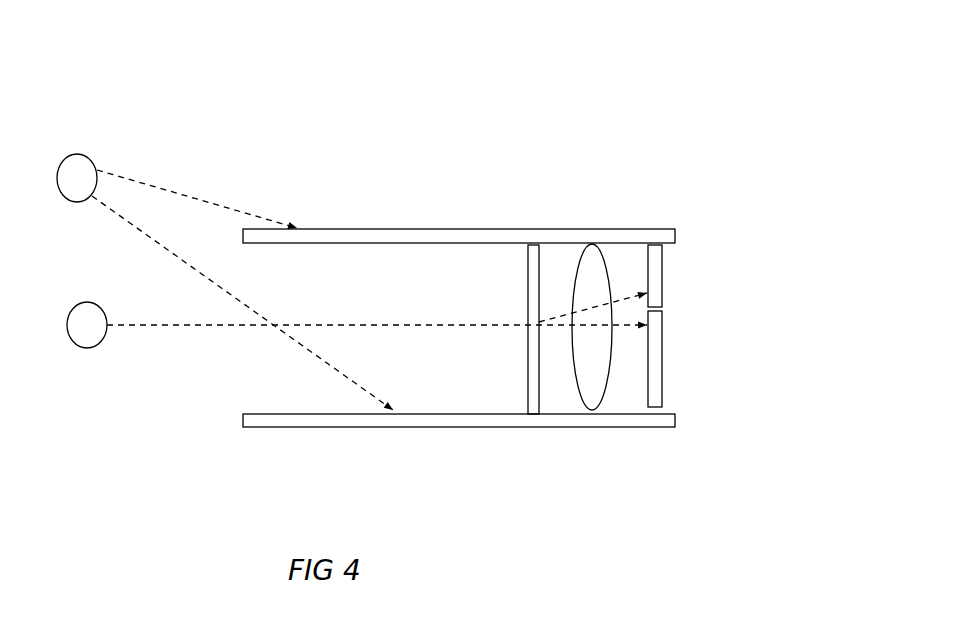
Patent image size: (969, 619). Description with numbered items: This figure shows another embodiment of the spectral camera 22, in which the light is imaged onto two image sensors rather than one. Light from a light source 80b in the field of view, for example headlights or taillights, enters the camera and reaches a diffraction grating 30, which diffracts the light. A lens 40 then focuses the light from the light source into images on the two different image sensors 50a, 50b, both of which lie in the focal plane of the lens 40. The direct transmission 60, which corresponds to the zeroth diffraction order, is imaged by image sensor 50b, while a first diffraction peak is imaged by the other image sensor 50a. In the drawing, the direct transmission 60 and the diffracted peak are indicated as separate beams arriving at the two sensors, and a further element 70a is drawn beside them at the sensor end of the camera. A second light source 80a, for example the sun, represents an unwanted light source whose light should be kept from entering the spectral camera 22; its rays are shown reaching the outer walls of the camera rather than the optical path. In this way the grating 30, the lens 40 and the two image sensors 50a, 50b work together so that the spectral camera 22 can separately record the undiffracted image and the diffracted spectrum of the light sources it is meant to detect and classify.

The spectral camera 22 is at (485, 132).
The diffraction grating 30 is at (533, 397).
The lens 40 is at (595, 273).
The image sensor 50a is at (672, 237).
The image sensor 50b is at (653, 405).
The direct transmission 60 is at (662, 330).
The sensor element 70a is at (662, 292).
The unwanted light source 80a is at (70, 153).
The light source 80b is at (77, 350).